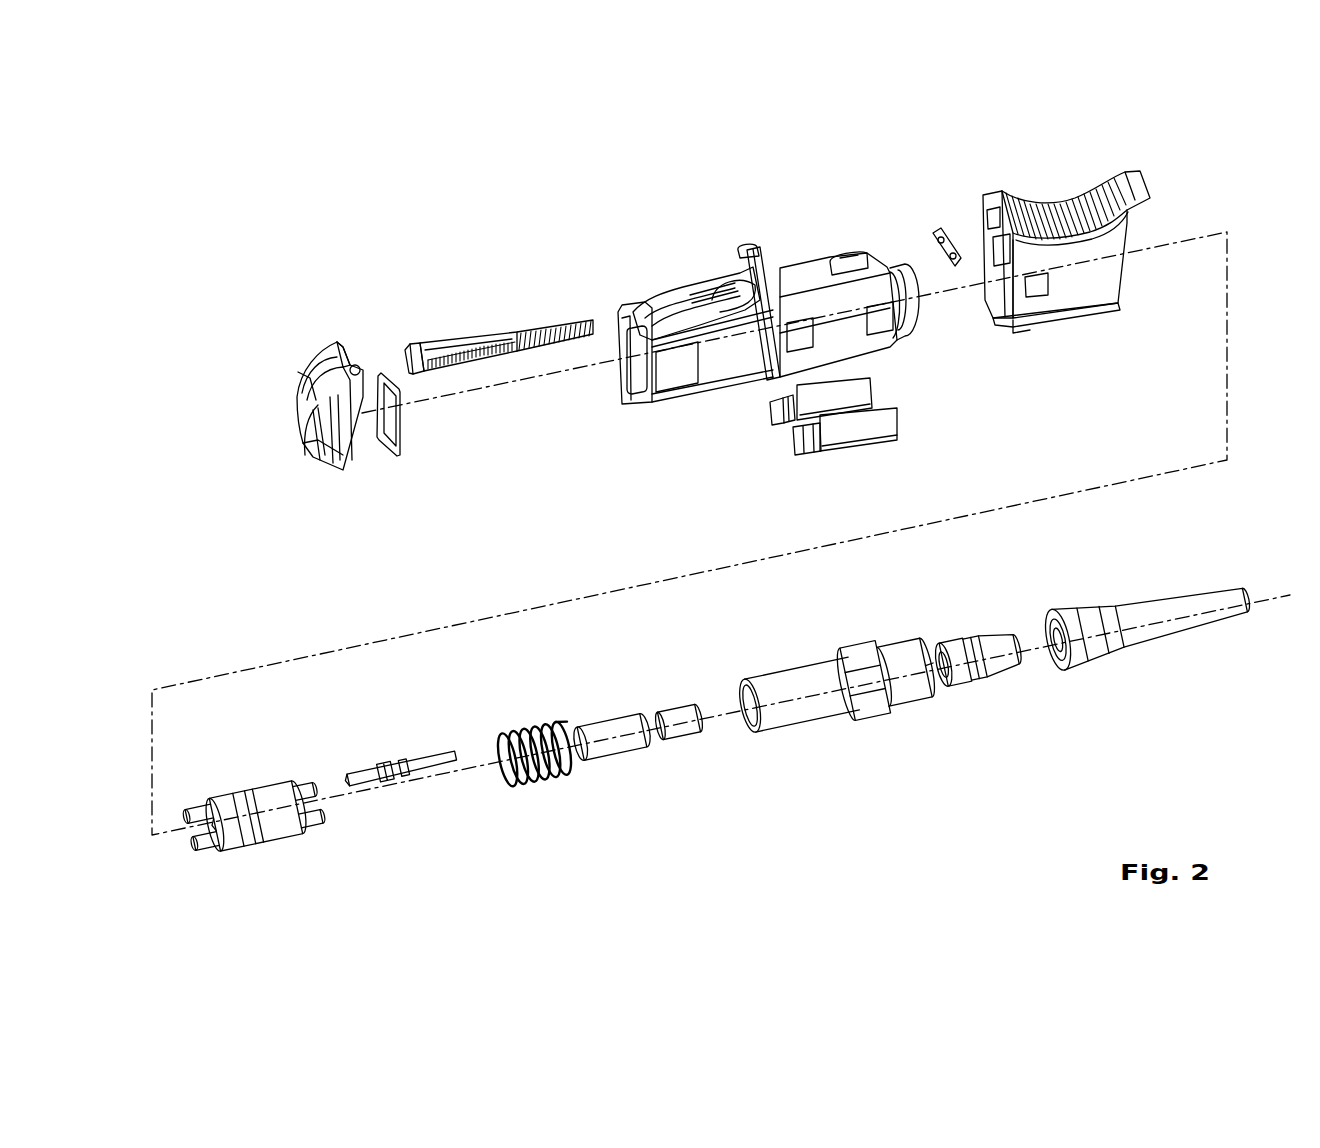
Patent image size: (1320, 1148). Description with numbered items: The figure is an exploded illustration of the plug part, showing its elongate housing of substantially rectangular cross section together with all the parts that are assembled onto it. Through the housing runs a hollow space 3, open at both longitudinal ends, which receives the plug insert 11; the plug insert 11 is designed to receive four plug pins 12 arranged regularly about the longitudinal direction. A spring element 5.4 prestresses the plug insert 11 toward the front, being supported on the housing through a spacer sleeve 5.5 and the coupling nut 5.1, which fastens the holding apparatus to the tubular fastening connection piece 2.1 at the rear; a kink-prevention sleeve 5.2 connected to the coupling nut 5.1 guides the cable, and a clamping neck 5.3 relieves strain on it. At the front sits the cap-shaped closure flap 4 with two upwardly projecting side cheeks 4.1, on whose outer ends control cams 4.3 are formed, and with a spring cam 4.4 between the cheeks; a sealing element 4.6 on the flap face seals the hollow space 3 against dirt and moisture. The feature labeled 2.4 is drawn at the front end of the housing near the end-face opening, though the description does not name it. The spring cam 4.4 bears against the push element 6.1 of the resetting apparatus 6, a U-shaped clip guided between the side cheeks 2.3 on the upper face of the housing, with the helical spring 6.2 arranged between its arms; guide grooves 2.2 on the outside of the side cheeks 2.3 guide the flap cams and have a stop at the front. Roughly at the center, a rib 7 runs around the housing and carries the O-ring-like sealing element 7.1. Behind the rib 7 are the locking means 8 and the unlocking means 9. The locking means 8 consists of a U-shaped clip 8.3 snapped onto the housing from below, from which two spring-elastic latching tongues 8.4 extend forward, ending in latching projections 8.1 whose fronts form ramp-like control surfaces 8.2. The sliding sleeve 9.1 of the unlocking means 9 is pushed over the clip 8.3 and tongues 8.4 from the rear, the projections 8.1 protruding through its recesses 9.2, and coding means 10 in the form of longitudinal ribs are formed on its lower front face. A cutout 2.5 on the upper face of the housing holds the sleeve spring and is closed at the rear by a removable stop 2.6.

The tubular fastening connection piece 2.1 is at (907, 307).
The guide groove 2.2 is at (690, 316).
The side cheek 2.3 is at (690, 300).
The plug opening 2.4 is at (672, 393).
The cutout 2.5 is at (855, 250).
The stop 2.6 is at (940, 232).
The hollow space 3 is at (630, 370).
The closure flap 4 is at (293, 422).
The side cheek 4.1 is at (313, 372).
The control cam 4.3 is at (332, 346).
The spring cam 4.4 is at (315, 386).
The sealing element 4.6 is at (402, 454).
The coupling nut 5.1 is at (887, 693).
The kink-prevention sleeve 5.2 is at (1133, 633).
The clamping neck 5.3 is at (993, 668).
The spring element 5.4 is at (540, 778).
The spacer sleeve 5.5 is at (793, 711).
The resetting apparatus 6 is at (490, 320).
The push element 6.1 is at (437, 352).
The helical spring 6.2 is at (557, 344).
The rib 7 is at (768, 266).
The sealing element 7.1 is at (745, 247).
The locking means 8 is at (902, 412).
The latching projection 8.1 is at (780, 400).
The control surface 8.2 is at (782, 393).
The U-shaped clip 8.3 is at (875, 438).
The latching tongue 8.4 is at (850, 431).
The unlocking means 9 is at (1066, 175).
The sliding sleeve 9.1 is at (1092, 263).
The recess 9.2 is at (990, 284).
The coding means 10 is at (1020, 324).
The plug insert 11 is at (277, 817).
The plug pin 12 is at (407, 767).